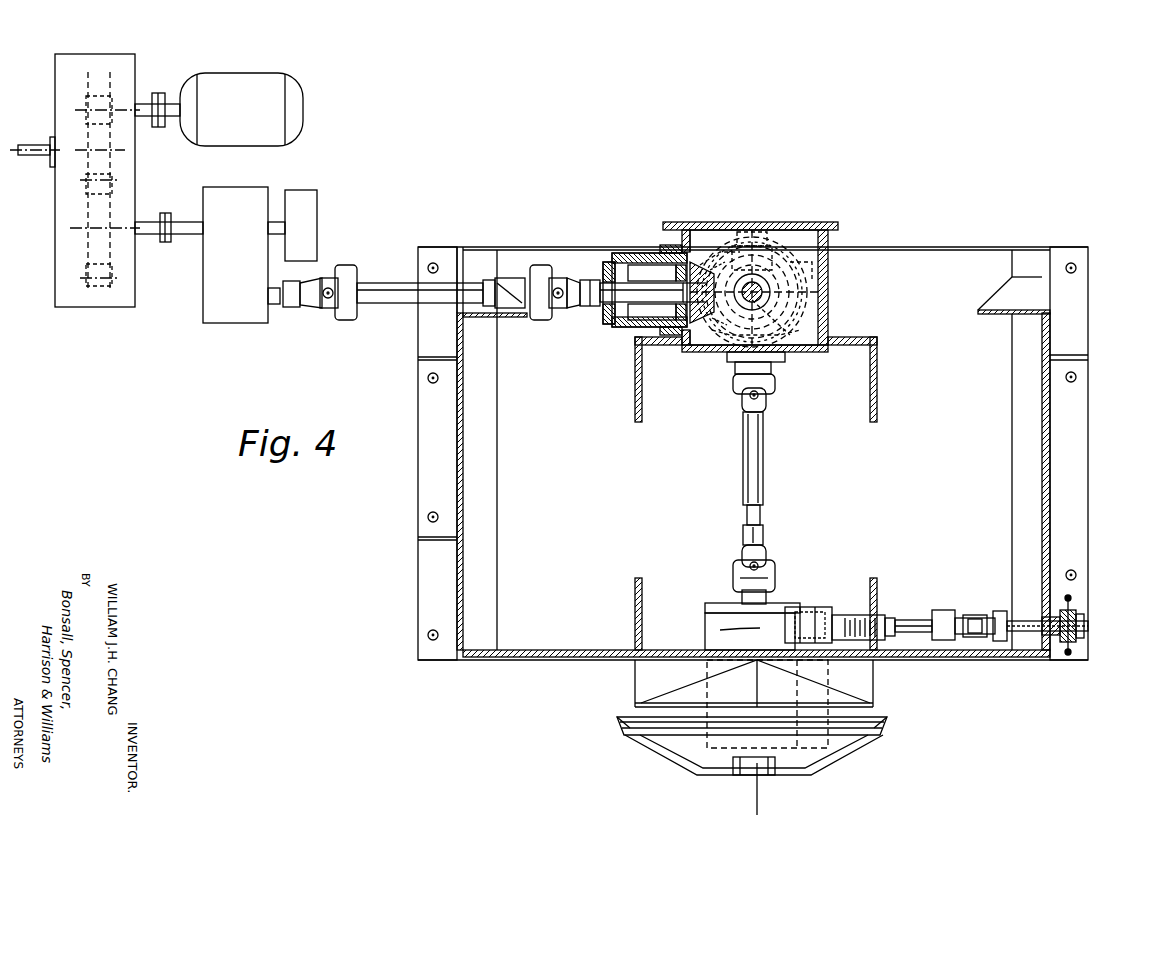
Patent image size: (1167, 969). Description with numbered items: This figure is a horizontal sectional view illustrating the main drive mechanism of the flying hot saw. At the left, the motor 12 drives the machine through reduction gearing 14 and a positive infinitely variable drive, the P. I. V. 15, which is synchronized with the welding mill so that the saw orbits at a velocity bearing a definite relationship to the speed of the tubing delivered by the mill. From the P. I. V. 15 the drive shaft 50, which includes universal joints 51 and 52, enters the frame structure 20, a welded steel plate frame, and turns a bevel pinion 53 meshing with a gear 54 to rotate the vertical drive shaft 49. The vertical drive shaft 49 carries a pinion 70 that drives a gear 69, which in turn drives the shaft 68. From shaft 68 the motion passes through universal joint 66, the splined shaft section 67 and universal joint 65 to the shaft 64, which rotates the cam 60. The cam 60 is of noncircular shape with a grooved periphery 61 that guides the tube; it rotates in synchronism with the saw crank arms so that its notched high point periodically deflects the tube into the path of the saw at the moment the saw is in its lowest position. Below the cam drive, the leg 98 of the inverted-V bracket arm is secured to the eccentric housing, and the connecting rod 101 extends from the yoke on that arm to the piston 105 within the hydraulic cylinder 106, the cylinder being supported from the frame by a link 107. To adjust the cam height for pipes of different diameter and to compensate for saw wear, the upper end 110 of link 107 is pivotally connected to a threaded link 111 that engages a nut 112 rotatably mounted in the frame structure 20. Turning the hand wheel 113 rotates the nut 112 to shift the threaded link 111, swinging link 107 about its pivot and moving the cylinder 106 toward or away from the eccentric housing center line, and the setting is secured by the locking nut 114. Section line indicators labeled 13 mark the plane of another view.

The motor 12 is at (255, 95).
The section line 13 is at (744, 511).
The reduction gearing 14 is at (103, 64).
The P. I. V. (positive infinitely variable drive) 15 is at (246, 293).
The frame structure 20 is at (1050, 470).
The vertical drive shaft 49 is at (755, 287).
The drive shaft 50 is at (404, 296).
The universal joint 51 is at (345, 320).
The universal joint 52 is at (530, 310).
The bevel pinion 53 is at (695, 262).
The gear 54 is at (722, 238).
The cam 60 is at (632, 738).
The grooved periphery 61 is at (880, 724).
The shaft 64 is at (760, 600).
The universal joint 65 is at (765, 585).
The universal joint 66 is at (773, 381).
The splined shaft section 67 is at (758, 457).
The shaft 68 is at (787, 324).
The gear 69 is at (800, 262).
The pinion 70 is at (805, 282).
The leg 98 is at (757, 623).
The connecting rod 101 is at (909, 620).
The piston 105 is at (940, 612).
The hydraulic cylinder 106 is at (955, 618).
The link 107 is at (975, 620).
The upper end of link 110 is at (980, 634).
The threaded link 111 is at (1020, 632).
The nut 112 is at (1074, 610).
The hand wheel 113 is at (1070, 598).
The locking nut 114 is at (1078, 620).